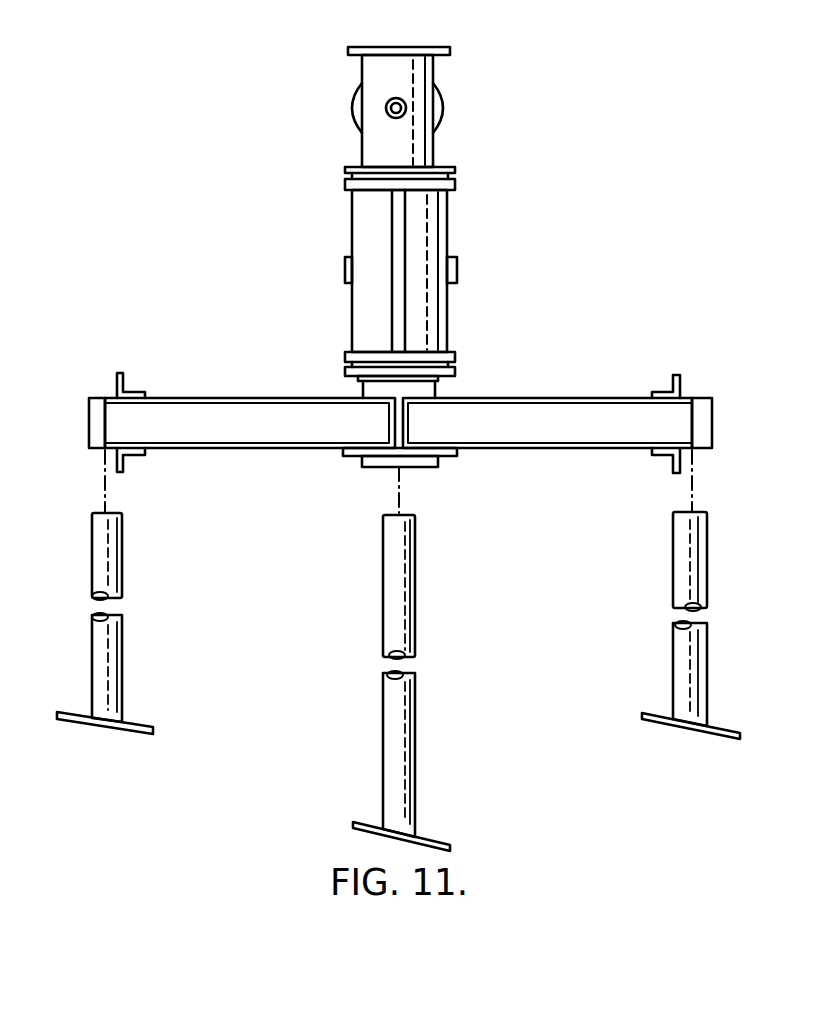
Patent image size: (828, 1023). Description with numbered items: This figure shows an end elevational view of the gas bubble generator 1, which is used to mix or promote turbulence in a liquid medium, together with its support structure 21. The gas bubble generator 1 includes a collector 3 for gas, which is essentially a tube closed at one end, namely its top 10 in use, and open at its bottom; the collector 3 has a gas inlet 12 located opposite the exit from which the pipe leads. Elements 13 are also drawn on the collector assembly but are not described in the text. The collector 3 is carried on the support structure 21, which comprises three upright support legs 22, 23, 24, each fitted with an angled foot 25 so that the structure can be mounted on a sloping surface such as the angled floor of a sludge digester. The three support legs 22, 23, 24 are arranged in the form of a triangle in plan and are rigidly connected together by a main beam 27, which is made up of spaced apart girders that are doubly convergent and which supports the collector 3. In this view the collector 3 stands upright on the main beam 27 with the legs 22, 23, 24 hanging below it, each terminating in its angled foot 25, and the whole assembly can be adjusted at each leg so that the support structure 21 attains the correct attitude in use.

The gas bubble generator 1 is at (298, 264).
The collector 3 is at (328, 171).
The top 10 is at (387, 45).
The gas inlet 12 is at (407, 110).
The side struts 13 is at (368, 293).
The support structure 21 is at (262, 538).
The support leg 22 is at (390, 693).
The support leg 23 is at (685, 573).
The support leg 24 is at (122, 598).
The angled foot 25 is at (145, 719).
The main beam 27 is at (243, 417).